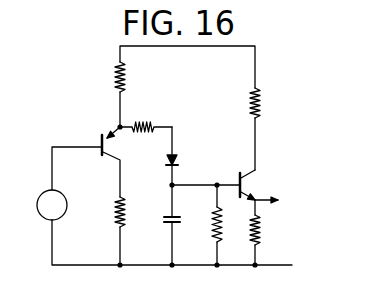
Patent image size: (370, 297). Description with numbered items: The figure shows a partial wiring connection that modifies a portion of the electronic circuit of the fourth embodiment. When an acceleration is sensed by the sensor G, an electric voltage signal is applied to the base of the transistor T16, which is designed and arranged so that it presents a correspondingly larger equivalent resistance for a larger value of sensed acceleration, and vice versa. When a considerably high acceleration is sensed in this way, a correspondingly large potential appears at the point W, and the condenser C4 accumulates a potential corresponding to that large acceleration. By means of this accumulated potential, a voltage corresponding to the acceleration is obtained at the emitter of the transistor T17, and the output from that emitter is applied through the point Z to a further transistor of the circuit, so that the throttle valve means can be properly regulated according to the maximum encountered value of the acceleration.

The transistor T16 is at (110, 125).
The point W is at (122, 126).
The transistor T17 is at (239, 168).
The condenser C4 is at (163, 226).
The point Z is at (270, 204).
The sensor G is at (52, 205).